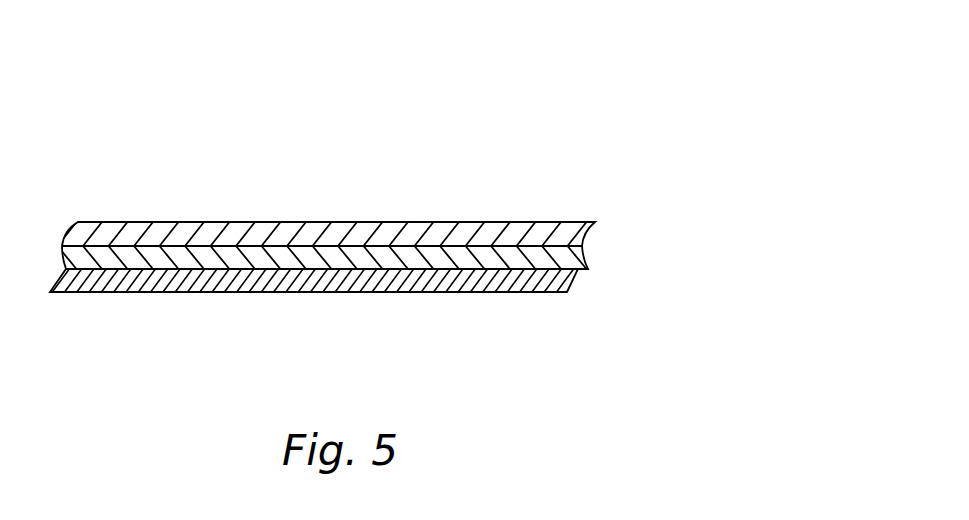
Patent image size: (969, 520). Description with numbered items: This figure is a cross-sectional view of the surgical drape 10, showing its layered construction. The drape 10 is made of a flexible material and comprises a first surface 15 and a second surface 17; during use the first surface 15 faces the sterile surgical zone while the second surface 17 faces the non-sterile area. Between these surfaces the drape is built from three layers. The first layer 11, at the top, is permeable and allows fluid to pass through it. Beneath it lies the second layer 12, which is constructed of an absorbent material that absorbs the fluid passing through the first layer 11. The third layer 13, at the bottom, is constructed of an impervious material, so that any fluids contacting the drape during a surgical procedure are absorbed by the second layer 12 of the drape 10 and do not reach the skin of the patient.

The surgical drape 10 is at (543, 125).
The first layer 11 is at (400, 222).
The second layer 12 is at (545, 257).
The third layer 13 is at (512, 283).
The first surface 15 is at (157, 222).
The second surface 17 is at (137, 292).